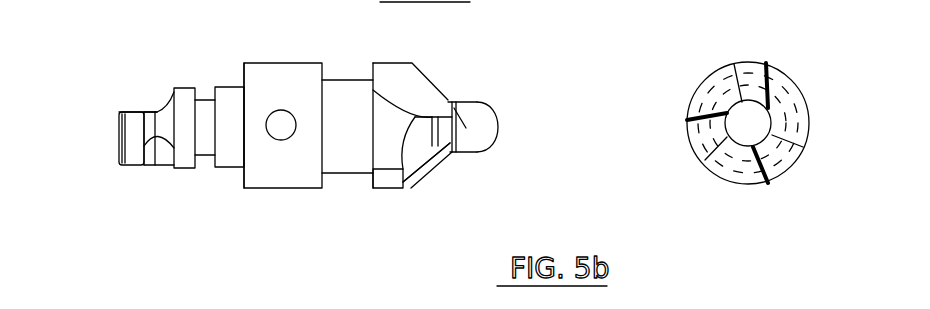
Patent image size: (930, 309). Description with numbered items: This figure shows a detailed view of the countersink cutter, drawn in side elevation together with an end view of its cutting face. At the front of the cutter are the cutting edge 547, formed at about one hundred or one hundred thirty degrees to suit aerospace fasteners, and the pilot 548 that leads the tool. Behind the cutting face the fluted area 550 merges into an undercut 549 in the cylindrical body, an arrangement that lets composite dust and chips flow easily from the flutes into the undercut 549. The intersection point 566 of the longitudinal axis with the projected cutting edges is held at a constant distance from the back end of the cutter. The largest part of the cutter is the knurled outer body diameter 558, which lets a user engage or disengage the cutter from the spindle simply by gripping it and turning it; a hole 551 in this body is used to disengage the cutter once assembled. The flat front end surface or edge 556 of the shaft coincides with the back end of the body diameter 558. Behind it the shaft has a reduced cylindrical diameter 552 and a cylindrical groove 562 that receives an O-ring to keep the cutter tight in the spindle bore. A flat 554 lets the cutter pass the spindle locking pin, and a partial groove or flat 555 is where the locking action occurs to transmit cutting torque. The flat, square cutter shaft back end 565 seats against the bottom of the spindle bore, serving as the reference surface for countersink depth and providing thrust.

The cutting edge 547 is at (422, 177).
The pilot 548 is at (466, 152).
The undercut 549 is at (345, 174).
The fluted area 550 is at (415, 85).
The hole 551 is at (280, 141).
The reduced cylindrical diameter 552 is at (226, 169).
The flat 554 is at (146, 110).
The partial groove or flat 555 is at (151, 167).
The front end surface or edge 556 is at (242, 66).
The knurled outer body diameter 558 is at (298, 189).
The cylindrical groove 562 is at (205, 97).
The cutter shaft back end 565 is at (112, 146).
The intersection point 566 is at (465, 128).